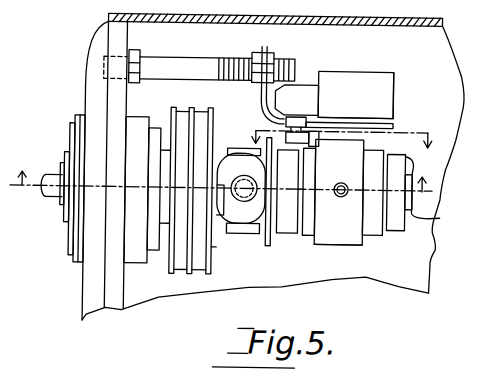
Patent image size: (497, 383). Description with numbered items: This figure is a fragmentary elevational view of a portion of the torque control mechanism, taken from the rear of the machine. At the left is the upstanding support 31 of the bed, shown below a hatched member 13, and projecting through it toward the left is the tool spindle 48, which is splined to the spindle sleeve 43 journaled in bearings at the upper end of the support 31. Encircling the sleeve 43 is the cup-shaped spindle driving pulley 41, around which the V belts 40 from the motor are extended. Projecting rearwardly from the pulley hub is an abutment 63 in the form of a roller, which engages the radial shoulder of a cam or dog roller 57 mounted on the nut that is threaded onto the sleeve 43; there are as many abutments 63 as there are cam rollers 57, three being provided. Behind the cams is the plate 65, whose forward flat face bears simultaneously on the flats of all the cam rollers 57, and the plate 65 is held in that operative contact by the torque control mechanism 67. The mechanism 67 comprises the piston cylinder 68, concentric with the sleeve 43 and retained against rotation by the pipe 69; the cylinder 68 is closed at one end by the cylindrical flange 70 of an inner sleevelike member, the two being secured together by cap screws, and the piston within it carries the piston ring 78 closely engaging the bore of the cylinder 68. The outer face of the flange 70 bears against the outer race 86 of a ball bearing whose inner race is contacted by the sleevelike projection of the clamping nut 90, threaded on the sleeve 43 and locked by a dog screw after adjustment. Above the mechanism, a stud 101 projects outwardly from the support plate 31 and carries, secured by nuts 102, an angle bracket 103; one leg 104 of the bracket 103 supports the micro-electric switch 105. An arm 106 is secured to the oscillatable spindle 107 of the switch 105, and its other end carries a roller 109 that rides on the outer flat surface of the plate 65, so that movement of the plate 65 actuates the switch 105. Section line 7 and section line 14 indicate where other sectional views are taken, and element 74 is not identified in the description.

The section line 7- 7 is at (221, 195).
The table plate 13 is at (470, 3).
The section line 14- 14 is at (332, 128).
The upstanding support 31 is at (115, 33).
The V belts 40 is at (180, 270).
The spindle driving pulley 41 is at (170, 116).
The spindle sleeve 43 is at (445, 206).
The tool spindle 48 is at (57, 196).
The cylindrical member or roller 57 is at (244, 222).
The abutment 63 is at (218, 246).
The plate 65 is at (270, 242).
The torque control mechanism 67 is at (298, 231).
The piston cylinder 68 is at (347, 240).
The pipe 69 is at (343, 194).
The cylindrical flange 70 is at (372, 233).
The washer 74 is at (300, 233).
The piston ring 78 is at (305, 237).
The outer race 86 is at (397, 229).
The clamping nut 90 is at (402, 158).
The stud 101 is at (177, 61).
The nuts 102 is at (263, 47).
The angle bracket 103 is at (393, 114).
The leg 104 is at (347, 114).
The micro-electric switch 105 is at (393, 73).
The arm 106 is at (305, 137).
The oscillatable spindle 107 is at (300, 109).
The roller 109 is at (283, 125).